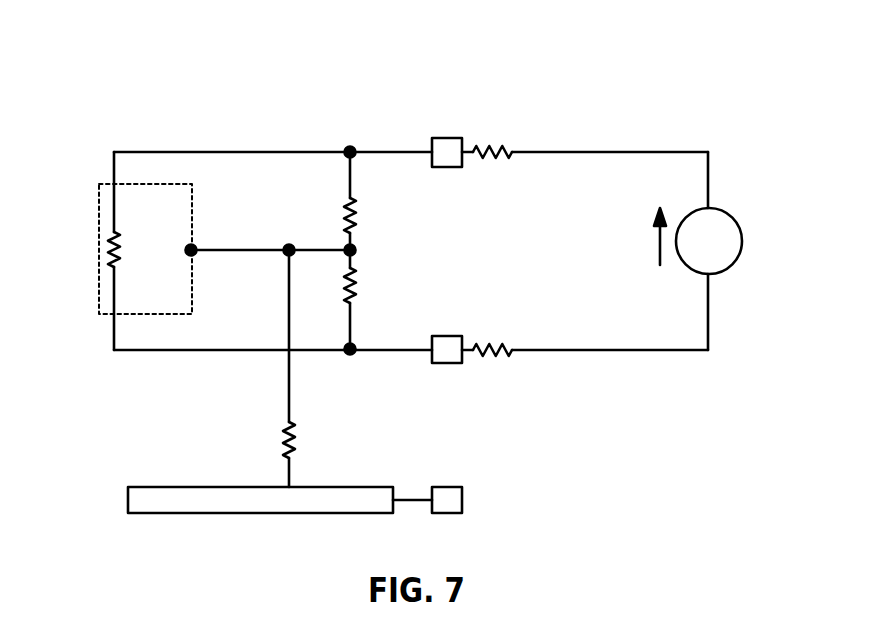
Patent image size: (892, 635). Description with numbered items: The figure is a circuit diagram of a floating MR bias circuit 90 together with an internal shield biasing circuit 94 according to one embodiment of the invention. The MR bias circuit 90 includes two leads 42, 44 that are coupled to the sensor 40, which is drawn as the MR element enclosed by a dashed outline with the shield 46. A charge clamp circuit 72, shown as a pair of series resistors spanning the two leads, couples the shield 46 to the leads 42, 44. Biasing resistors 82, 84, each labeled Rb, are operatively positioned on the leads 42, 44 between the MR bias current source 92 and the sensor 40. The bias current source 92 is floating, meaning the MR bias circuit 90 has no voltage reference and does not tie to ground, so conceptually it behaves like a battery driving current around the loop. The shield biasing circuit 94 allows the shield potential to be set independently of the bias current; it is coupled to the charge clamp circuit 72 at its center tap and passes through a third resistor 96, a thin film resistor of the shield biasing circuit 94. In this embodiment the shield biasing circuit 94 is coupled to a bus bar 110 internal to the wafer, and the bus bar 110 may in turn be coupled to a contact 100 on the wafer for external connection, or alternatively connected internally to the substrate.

The floating MR bias circuit 90 is at (100, 103).
The lead 44 is at (222, 152).
The lead 42 is at (383, 351).
The sensor 40 is at (103, 250).
The shield 46 is at (163, 314).
The charge clamp circuit 72 is at (383, 241).
The shield biasing circuit 94 is at (290, 393).
The third resistor 96 is at (296, 435).
The bus bar 110 is at (365, 487).
The contact 100 is at (462, 498).
The biasing resistor 82 is at (490, 150).
The biasing resistor 84 is at (488, 347).
The MR bias current source 92 is at (743, 240).